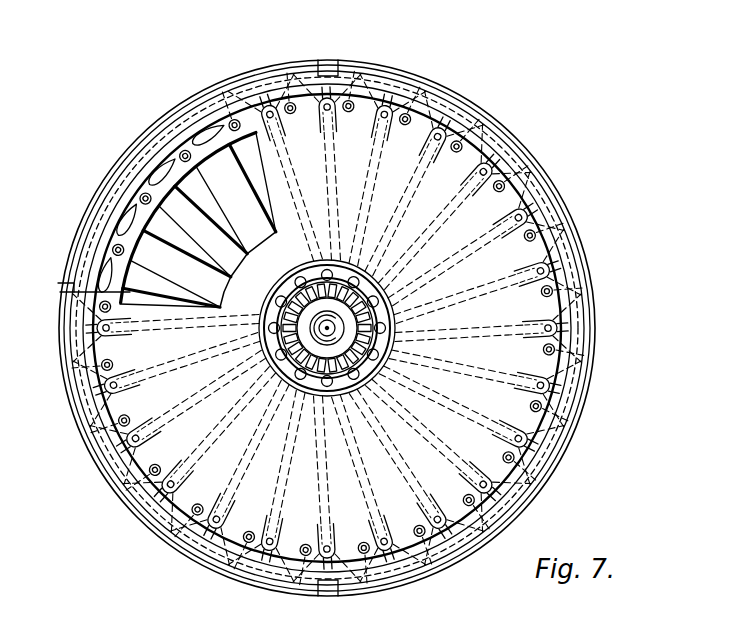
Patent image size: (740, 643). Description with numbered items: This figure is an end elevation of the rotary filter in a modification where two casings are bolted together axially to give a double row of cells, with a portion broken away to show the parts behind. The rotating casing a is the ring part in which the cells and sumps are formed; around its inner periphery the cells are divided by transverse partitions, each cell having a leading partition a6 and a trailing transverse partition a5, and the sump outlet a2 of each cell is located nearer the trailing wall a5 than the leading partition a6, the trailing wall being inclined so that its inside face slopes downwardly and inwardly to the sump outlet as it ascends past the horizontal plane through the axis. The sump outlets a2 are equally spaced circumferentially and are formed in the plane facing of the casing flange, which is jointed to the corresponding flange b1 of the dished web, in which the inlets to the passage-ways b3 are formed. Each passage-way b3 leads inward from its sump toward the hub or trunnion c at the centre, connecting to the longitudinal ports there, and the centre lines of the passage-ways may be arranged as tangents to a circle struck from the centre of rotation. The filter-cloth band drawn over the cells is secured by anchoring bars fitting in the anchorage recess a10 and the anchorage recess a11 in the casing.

The rotating casing a is at (198, 220).
The sump outlet a2 is at (327, 328).
The trailing transverse partition a5 is at (314, 328).
The leading partition a6 is at (327, 328).
The anchorage recess a10 is at (372, 57).
The anchorage recess a11 is at (312, 601).
The flange b1 is at (200, 82).
The passage-way b3 is at (166, 220).
The hub or trunnion c is at (336, 326).